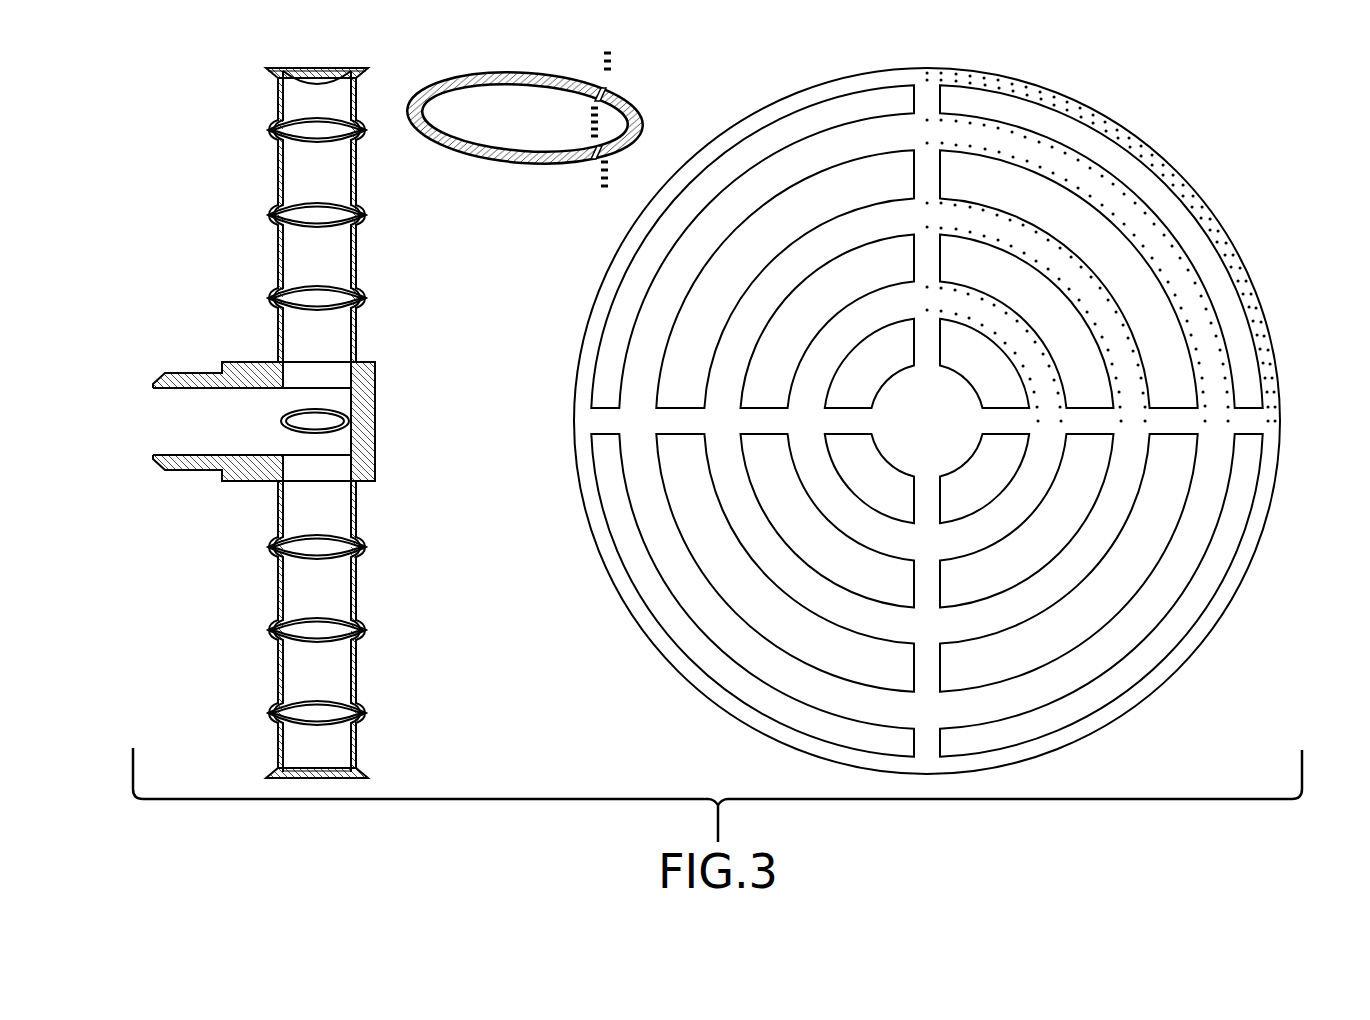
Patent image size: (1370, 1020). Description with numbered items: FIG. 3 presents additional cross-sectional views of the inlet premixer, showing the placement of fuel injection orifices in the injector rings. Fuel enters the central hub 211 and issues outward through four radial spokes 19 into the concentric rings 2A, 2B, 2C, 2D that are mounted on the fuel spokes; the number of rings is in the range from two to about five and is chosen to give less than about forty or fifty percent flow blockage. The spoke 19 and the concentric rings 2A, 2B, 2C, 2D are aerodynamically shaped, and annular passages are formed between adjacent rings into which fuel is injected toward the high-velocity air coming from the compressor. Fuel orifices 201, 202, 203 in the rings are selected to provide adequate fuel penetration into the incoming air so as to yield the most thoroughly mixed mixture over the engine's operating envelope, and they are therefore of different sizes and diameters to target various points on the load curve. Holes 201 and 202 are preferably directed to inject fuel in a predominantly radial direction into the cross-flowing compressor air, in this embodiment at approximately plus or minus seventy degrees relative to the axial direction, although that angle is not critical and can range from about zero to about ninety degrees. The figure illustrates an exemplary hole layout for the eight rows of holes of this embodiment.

The radial spoke 19 is at (357, 588).
The concentric ring 2A is at (357, 546).
The concentric ring 2B is at (358, 632).
The concentric ring 2C is at (358, 713).
The concentric ring 2D is at (366, 775).
The hub 211 is at (322, 397).
The fuel orifice 201 is at (610, 84).
The fuel orifice 202 is at (598, 163).
The slot 203 is at (1093, 295).